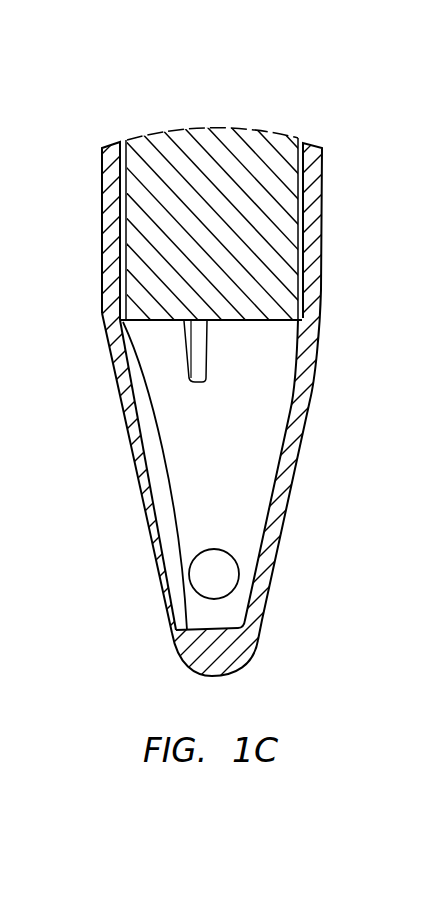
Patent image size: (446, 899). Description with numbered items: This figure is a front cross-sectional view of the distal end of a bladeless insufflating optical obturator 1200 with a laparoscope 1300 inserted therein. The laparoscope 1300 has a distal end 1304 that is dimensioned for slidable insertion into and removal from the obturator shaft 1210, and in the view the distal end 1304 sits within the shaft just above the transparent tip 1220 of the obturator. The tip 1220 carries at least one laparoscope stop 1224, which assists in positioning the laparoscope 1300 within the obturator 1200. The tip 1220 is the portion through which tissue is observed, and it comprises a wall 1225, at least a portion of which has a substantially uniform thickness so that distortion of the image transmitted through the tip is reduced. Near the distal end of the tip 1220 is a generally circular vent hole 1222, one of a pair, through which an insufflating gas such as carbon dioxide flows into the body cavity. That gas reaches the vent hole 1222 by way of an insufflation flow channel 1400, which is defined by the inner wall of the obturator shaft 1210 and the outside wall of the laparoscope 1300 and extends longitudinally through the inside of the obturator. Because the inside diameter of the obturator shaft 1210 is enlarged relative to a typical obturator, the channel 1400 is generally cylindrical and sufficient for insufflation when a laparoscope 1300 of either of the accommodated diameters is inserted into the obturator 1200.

The insufflating obturator 1200 is at (200, 449).
The obturator shaft 1210 is at (102, 273).
The distal tip 1220 is at (132, 472).
The vent hole 1222 is at (225, 569).
The laparoscope stop 1224 is at (200, 348).
The wall 1225 is at (128, 442).
The laparoscope 1300 is at (223, 240).
The distal end 1304 is at (262, 322).
The insufflation flow channel 1400 is at (302, 235).